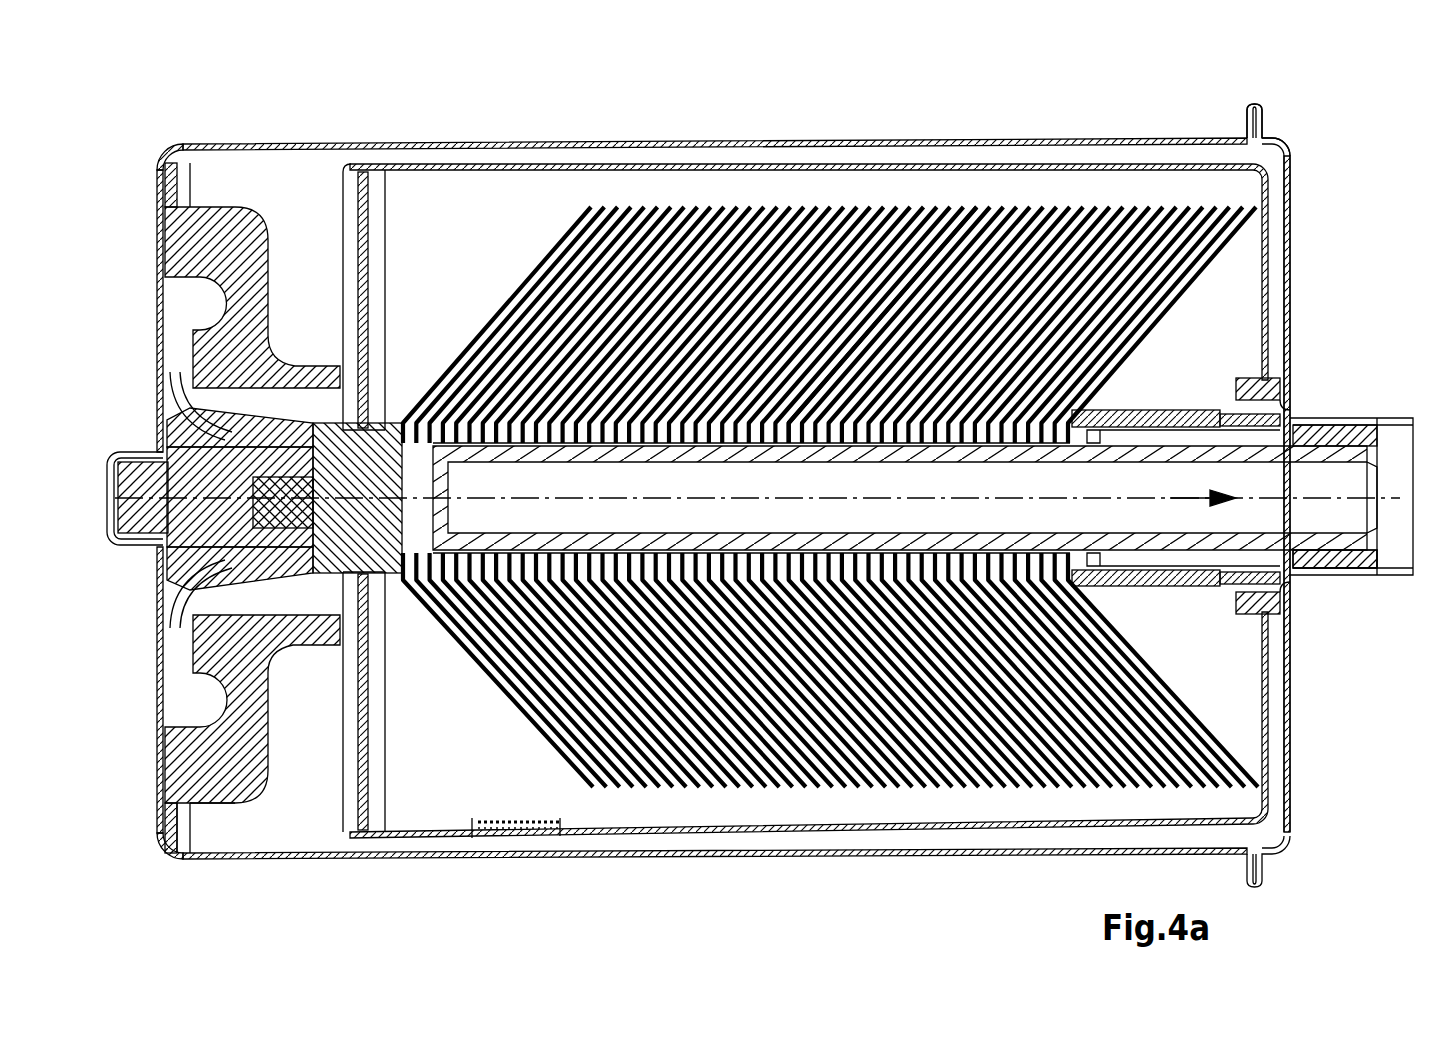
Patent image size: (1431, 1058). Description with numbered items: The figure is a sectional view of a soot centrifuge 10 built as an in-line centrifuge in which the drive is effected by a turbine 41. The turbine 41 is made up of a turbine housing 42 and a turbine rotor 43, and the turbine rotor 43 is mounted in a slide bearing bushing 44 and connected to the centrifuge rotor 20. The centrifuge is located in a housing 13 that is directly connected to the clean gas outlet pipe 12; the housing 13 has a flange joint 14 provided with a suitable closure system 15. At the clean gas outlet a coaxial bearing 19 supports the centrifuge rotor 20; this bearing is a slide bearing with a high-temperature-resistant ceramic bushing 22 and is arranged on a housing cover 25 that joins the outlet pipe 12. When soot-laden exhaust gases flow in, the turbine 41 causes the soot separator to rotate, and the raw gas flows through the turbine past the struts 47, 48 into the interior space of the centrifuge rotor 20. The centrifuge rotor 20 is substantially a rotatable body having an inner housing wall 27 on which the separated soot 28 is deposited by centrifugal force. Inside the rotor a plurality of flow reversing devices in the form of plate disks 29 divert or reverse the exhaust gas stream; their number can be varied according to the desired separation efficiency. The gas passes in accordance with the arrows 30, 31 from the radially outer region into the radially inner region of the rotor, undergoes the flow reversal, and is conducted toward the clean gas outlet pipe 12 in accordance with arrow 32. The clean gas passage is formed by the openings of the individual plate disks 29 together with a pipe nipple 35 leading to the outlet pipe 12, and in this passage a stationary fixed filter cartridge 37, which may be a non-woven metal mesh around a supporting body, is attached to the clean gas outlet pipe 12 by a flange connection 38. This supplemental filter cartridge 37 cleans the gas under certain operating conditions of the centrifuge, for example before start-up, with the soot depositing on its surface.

The soot centrifuge 10 is at (618, 116).
The clean gas outlet pipe 12 is at (1395, 442).
The housing 13 is at (958, 168).
The flange joint 14 is at (1263, 104).
The closure system 15 is at (1272, 122).
The bearing 19 is at (1276, 610).
The centrifuge rotor 20 is at (470, 830).
The ceramic bushing 22 is at (1272, 392).
The housing cover 25 is at (1290, 735).
The inner housing wall 27 is at (562, 832).
The separated soot 28 is at (505, 826).
The plate disks 29 is at (818, 204).
The arrow 30 is at (930, 190).
The arrow 31 is at (975, 792).
The arrow 32 is at (1196, 500).
The pipe nipple 35 is at (1182, 586).
The filter cartridge 37 is at (1145, 452).
The flange connection 38 is at (1362, 560).
The turbine 41 is at (228, 812).
The turbine housing 42 is at (246, 776).
The turbine rotor 43 is at (186, 406).
The slide bearing bushing 44 is at (146, 537).
The strut 47 is at (370, 697).
The strut 48 is at (370, 262).